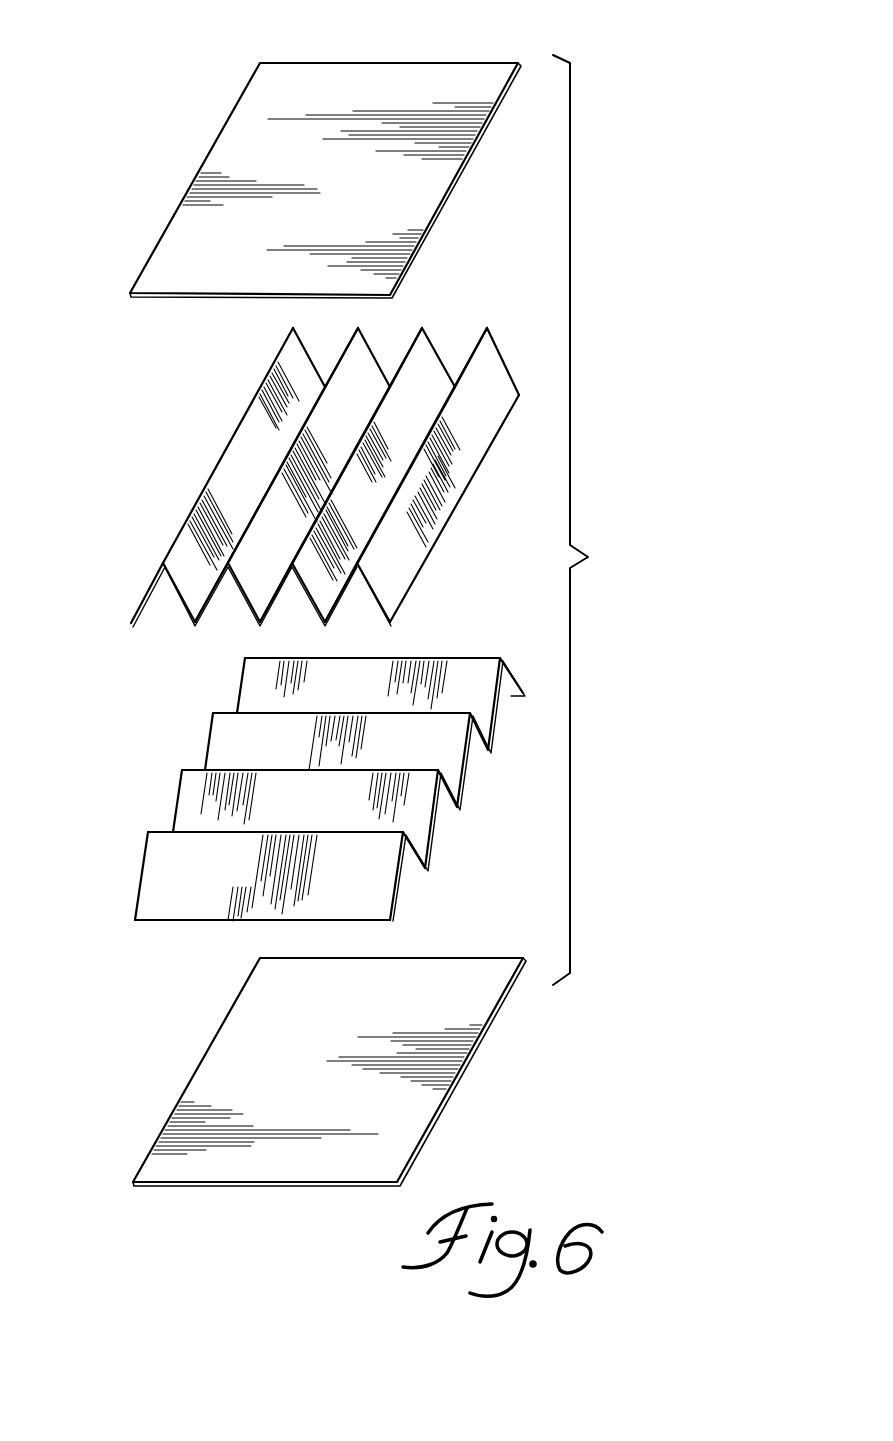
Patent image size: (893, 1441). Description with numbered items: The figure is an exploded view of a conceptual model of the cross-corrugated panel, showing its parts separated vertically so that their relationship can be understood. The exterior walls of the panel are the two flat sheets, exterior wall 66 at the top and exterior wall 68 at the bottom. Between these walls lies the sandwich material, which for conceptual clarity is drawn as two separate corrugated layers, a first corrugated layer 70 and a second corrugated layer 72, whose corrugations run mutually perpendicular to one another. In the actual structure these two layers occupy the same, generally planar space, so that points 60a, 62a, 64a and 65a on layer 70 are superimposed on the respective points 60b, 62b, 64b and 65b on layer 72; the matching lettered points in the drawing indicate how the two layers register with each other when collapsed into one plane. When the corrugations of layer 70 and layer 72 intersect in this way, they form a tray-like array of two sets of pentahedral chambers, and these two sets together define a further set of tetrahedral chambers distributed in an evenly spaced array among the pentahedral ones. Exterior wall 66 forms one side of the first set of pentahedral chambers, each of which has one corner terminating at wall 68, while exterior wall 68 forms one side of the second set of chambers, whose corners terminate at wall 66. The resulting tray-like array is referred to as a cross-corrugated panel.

The exterior wall 66 is at (377, 77).
The exterior wall 68 is at (430, 1120).
The point on layer 70 60a is at (338, 481).
The point on layer 72 60b is at (316, 808).
The point on layer 70 65a is at (293, 328).
The point on layer 72 65b is at (267, 658).
The point on layer 70 64a is at (131, 623).
The point on layer 72 64b is at (135, 920).
The point on layer 70 62a is at (390, 622).
The point on layer 72 62b is at (392, 921).
The corrugated layer 70 is at (457, 501).
The corrugated layer 72 is at (461, 780).